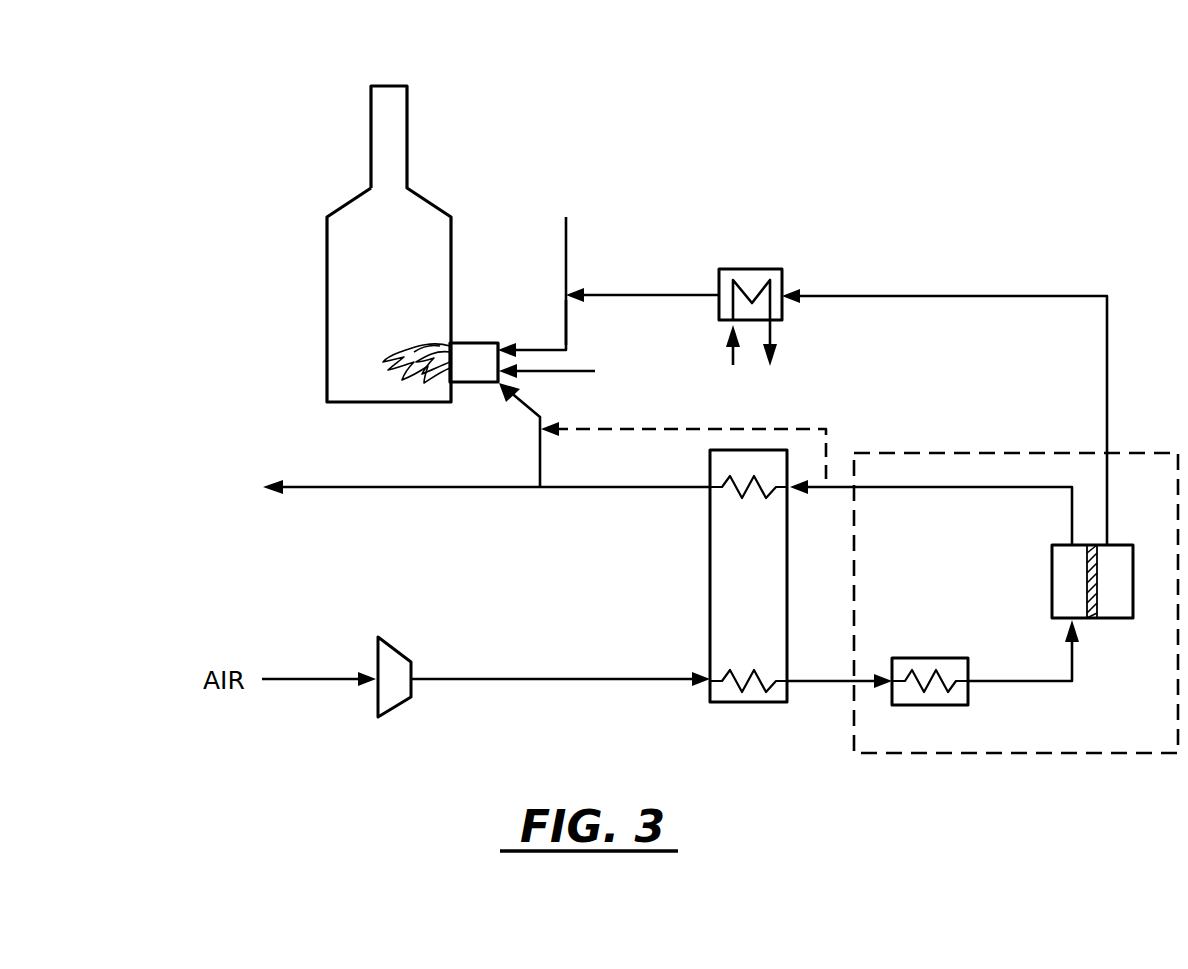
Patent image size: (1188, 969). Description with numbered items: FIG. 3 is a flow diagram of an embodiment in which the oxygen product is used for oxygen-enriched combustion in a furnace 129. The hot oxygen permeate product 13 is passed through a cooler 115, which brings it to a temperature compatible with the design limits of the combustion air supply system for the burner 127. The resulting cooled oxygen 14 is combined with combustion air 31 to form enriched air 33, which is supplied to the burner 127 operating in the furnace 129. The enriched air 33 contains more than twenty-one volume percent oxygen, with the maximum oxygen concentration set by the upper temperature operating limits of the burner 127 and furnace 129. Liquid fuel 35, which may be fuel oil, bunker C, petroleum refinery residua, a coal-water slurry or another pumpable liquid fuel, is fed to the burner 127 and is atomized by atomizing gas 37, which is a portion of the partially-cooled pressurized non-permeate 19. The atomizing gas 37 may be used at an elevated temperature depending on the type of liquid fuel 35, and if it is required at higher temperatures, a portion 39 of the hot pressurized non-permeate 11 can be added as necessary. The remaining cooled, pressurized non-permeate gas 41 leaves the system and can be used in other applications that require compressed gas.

The hot pressurized non-permeate 11 is at (915, 489).
The hot oxygen permeate product 13 is at (1005, 298).
The cooled oxygen 14 is at (682, 294).
The partially-cooled pressurized non-permeate 19 is at (600, 489).
The combustion air 31 is at (568, 243).
The enriched air 33 is at (568, 322).
The liquid fuel 35 is at (553, 372).
The atomizing gas 37 is at (510, 400).
The portion of hot pressurized non-permeate 39 is at (784, 430).
The remaining cooled pressurized non-permeate gas 41 is at (410, 489).
The cooler 115 is at (760, 269).
The burner 127 is at (476, 343).
The furnace 129 is at (407, 297).